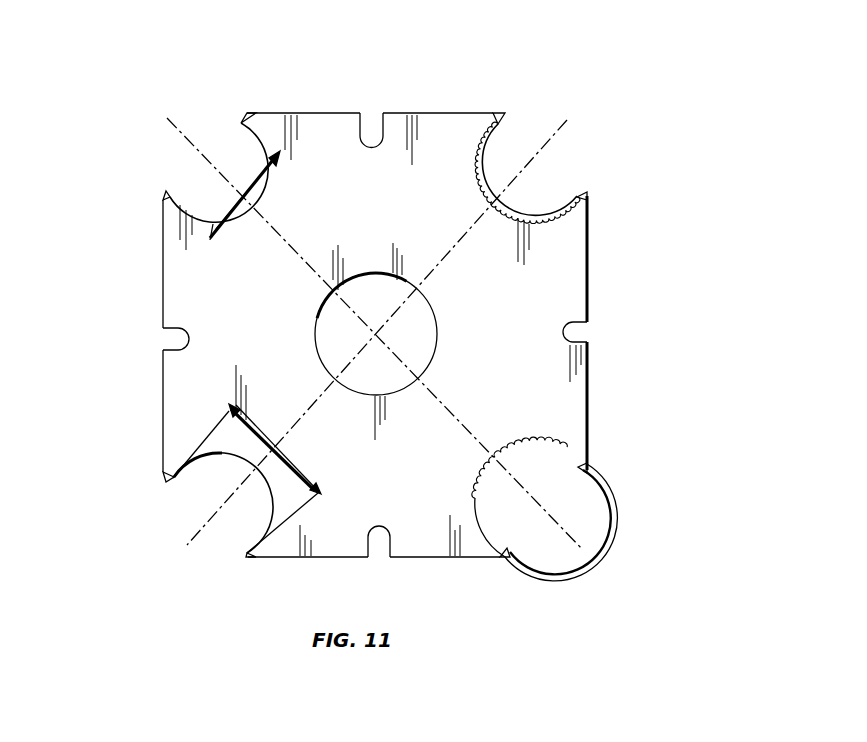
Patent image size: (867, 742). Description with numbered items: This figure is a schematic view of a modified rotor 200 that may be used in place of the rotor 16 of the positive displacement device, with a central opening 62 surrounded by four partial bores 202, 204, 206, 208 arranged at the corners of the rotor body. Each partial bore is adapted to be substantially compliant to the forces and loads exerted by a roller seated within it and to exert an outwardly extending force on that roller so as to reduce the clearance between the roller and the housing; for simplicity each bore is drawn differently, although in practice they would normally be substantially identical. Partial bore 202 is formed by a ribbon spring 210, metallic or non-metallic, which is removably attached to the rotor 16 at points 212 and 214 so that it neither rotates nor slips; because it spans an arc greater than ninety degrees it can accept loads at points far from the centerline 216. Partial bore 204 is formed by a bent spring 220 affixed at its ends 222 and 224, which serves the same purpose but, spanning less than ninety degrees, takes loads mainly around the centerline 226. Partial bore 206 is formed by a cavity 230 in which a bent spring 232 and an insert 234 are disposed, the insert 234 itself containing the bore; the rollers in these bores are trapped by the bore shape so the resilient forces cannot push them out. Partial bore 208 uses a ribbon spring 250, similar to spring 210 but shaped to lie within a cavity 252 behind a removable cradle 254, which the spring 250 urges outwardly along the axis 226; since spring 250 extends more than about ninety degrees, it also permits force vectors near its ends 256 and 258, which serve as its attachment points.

The rotor 200 is at (125, 97).
The rotor 16 is at (567, 240).
The central mounting hole 62 is at (427, 328).
The partial bore 202 is at (540, 172).
The partial bore 204 is at (207, 183).
The partial bore 206 is at (215, 482).
The partial bore 208 is at (547, 482).
The ribbon spring 210 is at (490, 142).
The attachment point 212 is at (588, 201).
The attachment point 214 is at (498, 113).
The centerline 216 is at (471, 227).
The centerline 226 is at (274, 228).
The bent spring 220 is at (253, 180).
The end 222 is at (210, 240).
The end 224 is at (278, 153).
The cavity 230 is at (255, 432).
The bent spring 232 is at (307, 490).
The insert 234 is at (212, 442).
The ribbon spring 250 is at (505, 432).
The cavity 252 is at (567, 440).
The removable cradle 254 is at (590, 466).
The end 256 is at (570, 442).
The end 258 is at (482, 535).